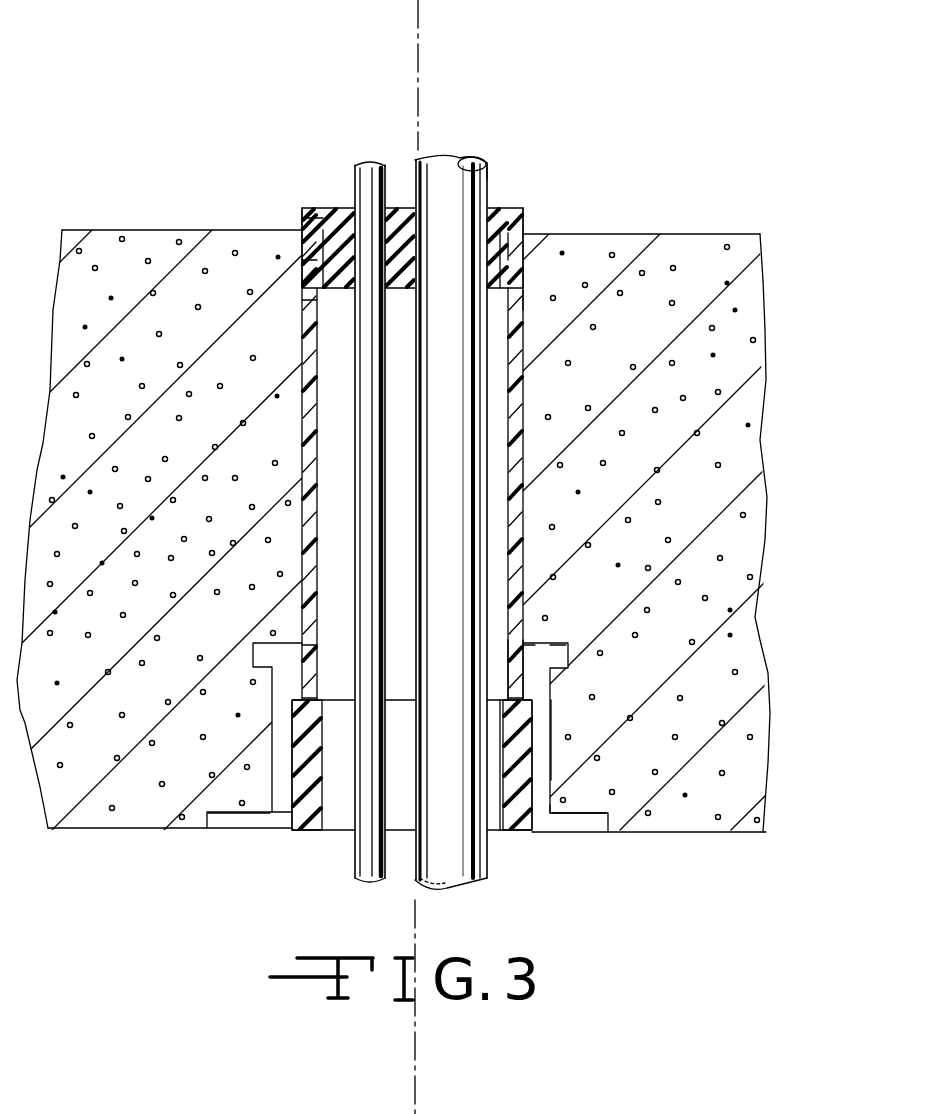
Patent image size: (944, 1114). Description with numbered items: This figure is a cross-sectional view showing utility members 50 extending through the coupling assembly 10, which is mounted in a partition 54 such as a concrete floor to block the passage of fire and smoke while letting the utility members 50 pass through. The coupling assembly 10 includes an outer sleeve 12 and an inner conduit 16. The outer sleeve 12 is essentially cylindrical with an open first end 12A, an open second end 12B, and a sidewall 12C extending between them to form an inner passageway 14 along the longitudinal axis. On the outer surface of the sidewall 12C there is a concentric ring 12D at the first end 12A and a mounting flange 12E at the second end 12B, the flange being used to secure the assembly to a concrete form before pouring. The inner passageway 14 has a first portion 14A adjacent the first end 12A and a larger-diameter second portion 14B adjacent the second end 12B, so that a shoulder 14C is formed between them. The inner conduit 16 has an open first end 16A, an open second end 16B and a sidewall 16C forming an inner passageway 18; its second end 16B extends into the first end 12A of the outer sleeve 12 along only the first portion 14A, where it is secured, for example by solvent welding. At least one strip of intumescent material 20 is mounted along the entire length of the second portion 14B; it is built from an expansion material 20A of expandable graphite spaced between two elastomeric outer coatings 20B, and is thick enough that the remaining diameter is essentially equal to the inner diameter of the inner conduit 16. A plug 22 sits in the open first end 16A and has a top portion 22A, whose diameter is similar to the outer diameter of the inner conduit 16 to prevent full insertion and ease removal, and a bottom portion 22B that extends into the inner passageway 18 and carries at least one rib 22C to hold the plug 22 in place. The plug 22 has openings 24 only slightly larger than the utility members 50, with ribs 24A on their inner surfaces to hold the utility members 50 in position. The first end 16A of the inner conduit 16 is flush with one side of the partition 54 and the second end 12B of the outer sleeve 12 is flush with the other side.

The coupling assembly 10 is at (460, 525).
The outer sleeve 12 is at (520, 691).
The first end of outer sleeve 12A is at (526, 641).
The second end of outer sleeve 12B is at (555, 805).
The sidewall of outer sleeve 12C is at (552, 745).
The concentric ring 12D is at (570, 653).
The mounting flange 12E is at (712, 833).
The inner passageway of outer sleeve 14 is at (327, 834).
The first portion of inner passageway 14A is at (320, 671).
The second portion of inner passageway 14B is at (283, 791).
The shoulder 14C is at (497, 833).
The inner conduit 16 is at (527, 402).
The first end of inner conduit 16A is at (527, 237).
The second end of inner conduit 16B is at (522, 689).
The sidewall of inner conduit 16C is at (530, 347).
The inner passageway of inner conduit 18 is at (532, 300).
The intumescent material 20 is at (390, 820).
The expansion material 20A is at (563, 833).
The outer coatings 20B is at (293, 727).
The plug 22 is at (522, 228).
The top portion of plug 22A is at (305, 262).
The bottom portion of plug 22B is at (312, 318).
The rib 22C is at (303, 220).
The openings 24 is at (417, 199).
The ribs 24A is at (352, 250).
The utility members 50 is at (489, 177).
The partition 54 is at (767, 397).